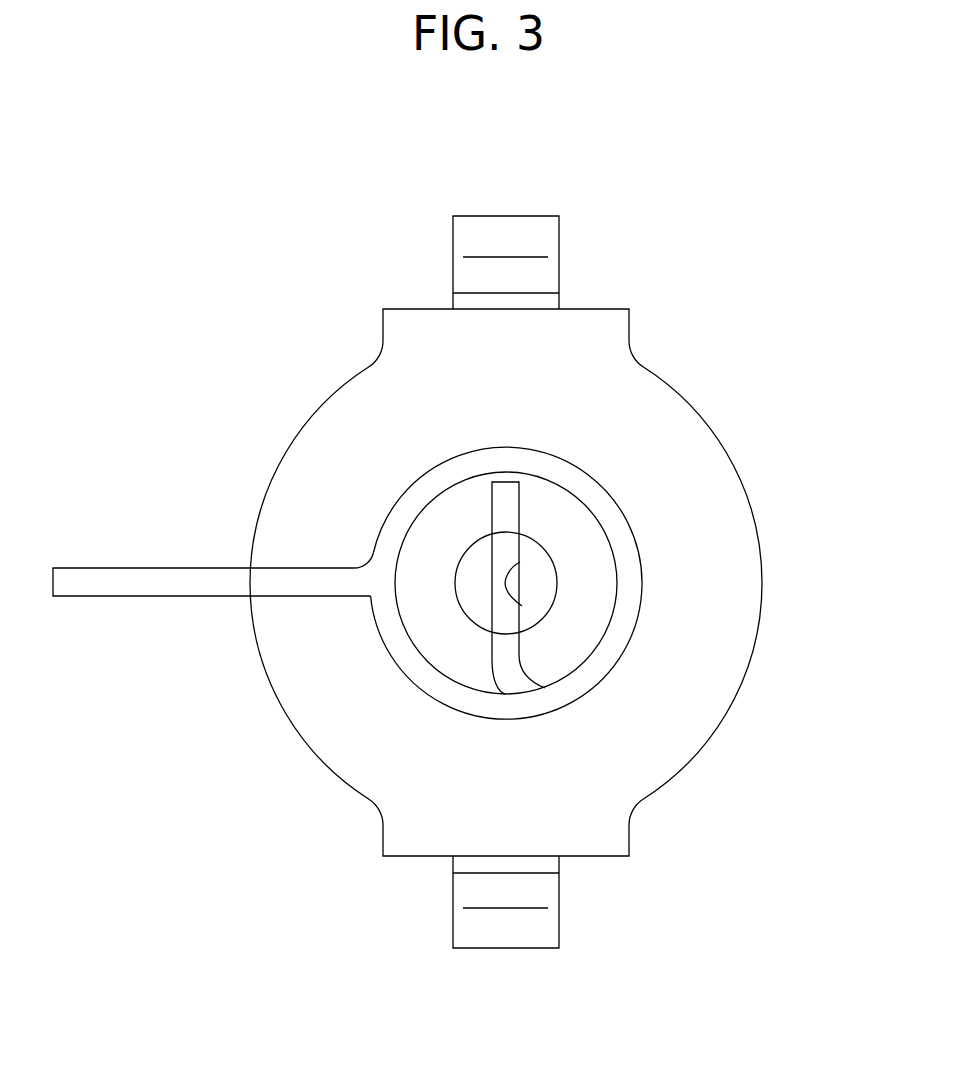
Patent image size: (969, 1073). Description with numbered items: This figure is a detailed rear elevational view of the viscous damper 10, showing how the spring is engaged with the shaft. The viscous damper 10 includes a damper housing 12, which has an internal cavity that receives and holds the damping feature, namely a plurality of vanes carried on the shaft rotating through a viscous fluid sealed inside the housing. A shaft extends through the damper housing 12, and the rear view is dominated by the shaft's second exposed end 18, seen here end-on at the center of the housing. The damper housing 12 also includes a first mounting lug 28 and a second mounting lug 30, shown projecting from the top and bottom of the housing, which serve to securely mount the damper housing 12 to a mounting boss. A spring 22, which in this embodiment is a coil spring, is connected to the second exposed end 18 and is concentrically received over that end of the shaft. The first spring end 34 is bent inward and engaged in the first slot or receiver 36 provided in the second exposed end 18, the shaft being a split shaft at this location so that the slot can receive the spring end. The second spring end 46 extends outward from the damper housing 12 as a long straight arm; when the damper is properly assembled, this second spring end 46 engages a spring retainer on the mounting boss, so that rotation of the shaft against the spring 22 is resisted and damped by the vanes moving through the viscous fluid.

The viscous damper 10 is at (733, 256).
The damper housing 12 is at (762, 557).
The second exposed end 18 is at (472, 602).
The spring 22 is at (612, 498).
The first mounting lug 28 is at (478, 225).
The second mounting lug 30 is at (517, 932).
The first spring end 34 is at (505, 510).
The first slot or receiver 36 is at (522, 606).
The second spring end 46 is at (137, 590).